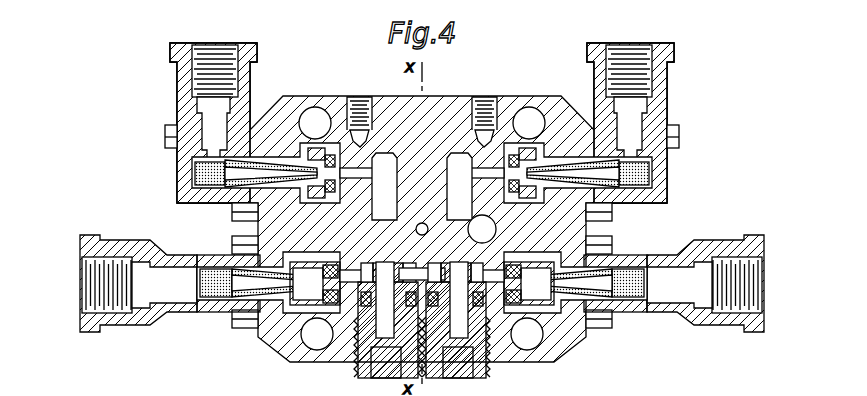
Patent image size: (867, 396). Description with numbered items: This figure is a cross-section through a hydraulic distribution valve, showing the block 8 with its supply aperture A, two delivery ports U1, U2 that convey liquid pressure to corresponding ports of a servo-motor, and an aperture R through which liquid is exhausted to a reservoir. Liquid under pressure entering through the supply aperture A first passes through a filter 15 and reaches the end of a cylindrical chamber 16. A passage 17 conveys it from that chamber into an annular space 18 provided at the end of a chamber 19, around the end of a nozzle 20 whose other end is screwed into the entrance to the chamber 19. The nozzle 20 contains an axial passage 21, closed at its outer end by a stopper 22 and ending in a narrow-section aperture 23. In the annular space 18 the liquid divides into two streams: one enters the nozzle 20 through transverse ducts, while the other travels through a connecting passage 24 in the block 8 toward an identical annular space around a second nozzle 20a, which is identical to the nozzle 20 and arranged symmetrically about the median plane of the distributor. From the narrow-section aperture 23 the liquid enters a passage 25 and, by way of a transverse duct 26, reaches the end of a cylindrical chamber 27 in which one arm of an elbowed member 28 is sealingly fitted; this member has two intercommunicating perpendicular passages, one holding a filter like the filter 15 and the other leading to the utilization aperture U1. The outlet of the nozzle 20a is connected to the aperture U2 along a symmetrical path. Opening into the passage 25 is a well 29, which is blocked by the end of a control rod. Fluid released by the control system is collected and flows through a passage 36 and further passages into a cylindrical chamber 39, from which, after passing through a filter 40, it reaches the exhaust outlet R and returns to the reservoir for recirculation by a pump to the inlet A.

The block 8 is at (390, 109).
The filter 15 is at (630, 290).
The cylindrical chamber 16 is at (504, 307).
The passage 17 is at (490, 262).
The annular space 18 is at (472, 249).
The chamber 19 is at (445, 296).
The nozzle 20 is at (480, 314).
The nozzle 20a is at (363, 310).
The axial passage 21 is at (428, 276).
The stopper 22 is at (463, 364).
The narrow-section aperture 23 is at (400, 220).
The connecting passage 24 is at (404, 262).
The passage 25 is at (446, 178).
The transverse duct 26 is at (486, 173).
The cylindrical chamber 27 is at (525, 153).
The elbowed member 28 is at (651, 113).
The well 29 is at (494, 224).
The passage 36 is at (295, 181).
The cylindrical chamber 39 is at (270, 339).
The filter 40 is at (222, 296).
The aperture R is at (80, 280).
The supply aperture A is at (766, 298).
The delivery port U1 is at (629, 92).
The delivery port U2 is at (211, 112).